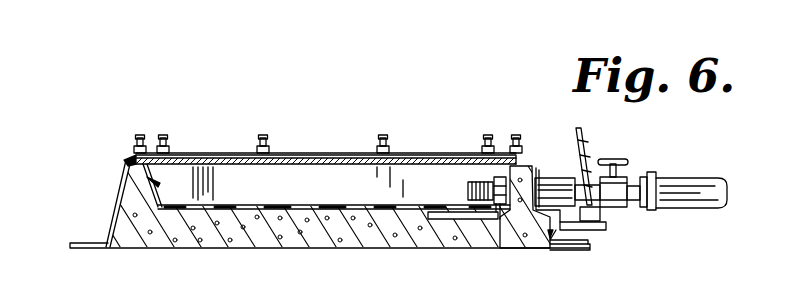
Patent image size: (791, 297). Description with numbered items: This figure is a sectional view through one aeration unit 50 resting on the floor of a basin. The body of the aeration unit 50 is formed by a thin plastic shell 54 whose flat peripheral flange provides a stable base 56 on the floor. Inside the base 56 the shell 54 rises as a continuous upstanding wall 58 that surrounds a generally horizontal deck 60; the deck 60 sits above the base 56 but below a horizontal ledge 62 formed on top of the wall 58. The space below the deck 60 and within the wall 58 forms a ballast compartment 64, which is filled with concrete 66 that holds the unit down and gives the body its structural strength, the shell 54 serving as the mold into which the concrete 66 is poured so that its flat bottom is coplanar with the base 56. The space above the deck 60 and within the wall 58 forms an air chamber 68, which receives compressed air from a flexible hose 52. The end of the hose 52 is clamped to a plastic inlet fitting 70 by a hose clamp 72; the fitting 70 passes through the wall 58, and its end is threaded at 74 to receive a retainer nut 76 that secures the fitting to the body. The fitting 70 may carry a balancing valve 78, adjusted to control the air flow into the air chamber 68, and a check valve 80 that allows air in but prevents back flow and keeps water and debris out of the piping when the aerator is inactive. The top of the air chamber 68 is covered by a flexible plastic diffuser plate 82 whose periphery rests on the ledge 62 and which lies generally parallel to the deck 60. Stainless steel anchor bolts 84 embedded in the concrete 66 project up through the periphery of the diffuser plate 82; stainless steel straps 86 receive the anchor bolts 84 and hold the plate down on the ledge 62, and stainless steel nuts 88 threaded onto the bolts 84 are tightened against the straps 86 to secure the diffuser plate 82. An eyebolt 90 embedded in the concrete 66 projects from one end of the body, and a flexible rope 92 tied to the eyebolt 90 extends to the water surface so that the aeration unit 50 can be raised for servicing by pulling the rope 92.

The aeration unit 50 is at (423, 38).
The flexible hose 52 is at (708, 182).
The thin plastic shell 54 is at (103, 232).
The base 56 is at (80, 247).
The upstanding wall 58 is at (118, 183).
The deck 60 is at (283, 212).
The ledge 62 is at (126, 161).
The ballast compartment 64 is at (348, 215).
The concrete 66 is at (328, 248).
The air chamber 68 is at (330, 170).
The inlet fitting 70 is at (594, 204).
The hose clamp 72 is at (657, 178).
The threaded end 74 is at (468, 189).
The retainer nut 76 is at (503, 243).
The balancing valve 78 is at (625, 177).
The check valve 80 is at (540, 178).
The diffuser plate 82 is at (442, 160).
The anchor bolts 84 is at (166, 136).
The straps 86 is at (152, 183).
The nuts 88 is at (252, 151).
The eyebolt 90 is at (606, 228).
The flexible rope 92 is at (590, 138).